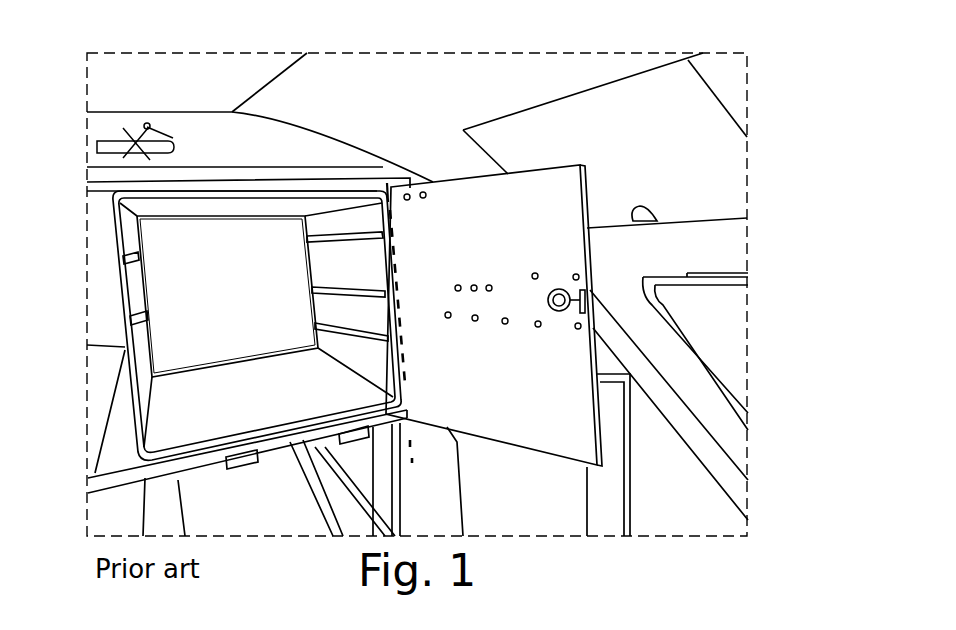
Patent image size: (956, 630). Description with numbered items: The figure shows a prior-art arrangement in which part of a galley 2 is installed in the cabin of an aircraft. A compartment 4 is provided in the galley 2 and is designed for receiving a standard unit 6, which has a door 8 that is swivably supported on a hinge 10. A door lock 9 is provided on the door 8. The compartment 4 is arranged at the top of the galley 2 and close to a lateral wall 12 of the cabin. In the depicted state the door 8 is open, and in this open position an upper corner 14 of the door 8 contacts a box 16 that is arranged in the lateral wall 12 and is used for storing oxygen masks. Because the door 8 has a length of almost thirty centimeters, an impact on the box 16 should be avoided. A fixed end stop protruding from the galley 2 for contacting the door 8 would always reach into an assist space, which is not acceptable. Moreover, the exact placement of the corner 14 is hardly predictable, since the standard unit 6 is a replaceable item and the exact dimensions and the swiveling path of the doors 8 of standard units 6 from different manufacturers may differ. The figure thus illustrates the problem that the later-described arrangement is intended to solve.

The galley 2 is at (640, 398).
The compartment 4 is at (112, 278).
The standard unit 6 is at (224, 226).
The door 8 is at (453, 229).
The door lock 9 is at (590, 290).
The hinge 10 is at (385, 156).
The lateral wall 12 is at (728, 240).
The upper corner 14 is at (582, 167).
The box 16 is at (728, 173).